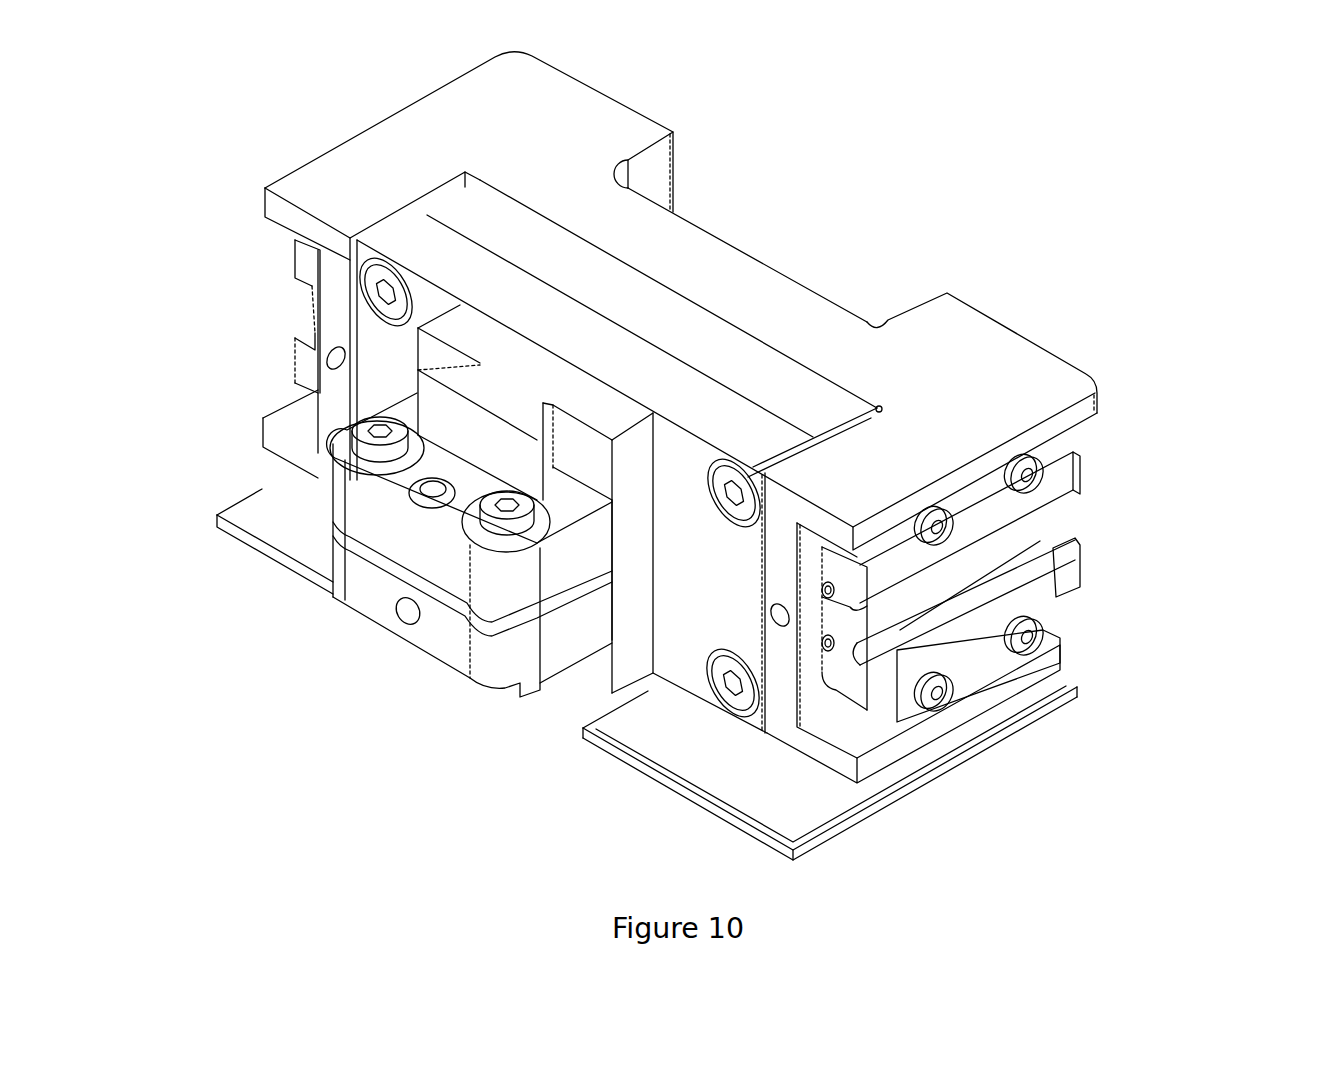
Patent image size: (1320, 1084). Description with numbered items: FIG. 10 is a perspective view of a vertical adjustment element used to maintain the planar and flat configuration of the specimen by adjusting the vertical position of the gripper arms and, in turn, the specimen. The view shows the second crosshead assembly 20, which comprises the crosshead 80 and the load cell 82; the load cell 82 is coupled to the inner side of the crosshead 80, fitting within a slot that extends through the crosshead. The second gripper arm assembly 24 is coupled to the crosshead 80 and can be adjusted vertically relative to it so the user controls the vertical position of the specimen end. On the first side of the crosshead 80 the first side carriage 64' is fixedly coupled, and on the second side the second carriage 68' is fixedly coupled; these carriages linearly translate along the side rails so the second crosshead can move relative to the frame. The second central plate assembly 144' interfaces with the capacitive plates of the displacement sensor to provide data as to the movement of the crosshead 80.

The second crosshead assembly 20 is at (652, 70).
The load cell 82 is at (662, 316).
The crosshead 80 is at (990, 333).
The first side carriage 64' is at (233, 316).
The second carriage 68' is at (1050, 585).
The second gripper arm assembly 24 is at (360, 602).
The second central plate assembly 144' is at (647, 682).